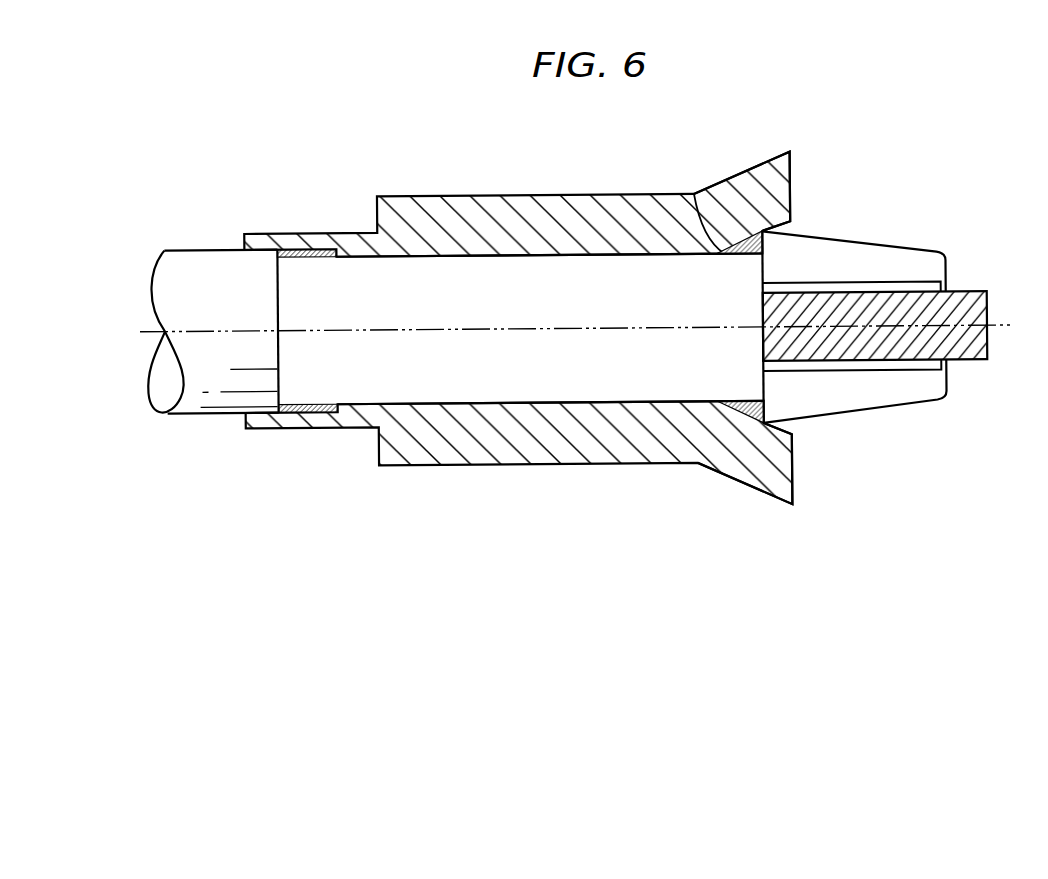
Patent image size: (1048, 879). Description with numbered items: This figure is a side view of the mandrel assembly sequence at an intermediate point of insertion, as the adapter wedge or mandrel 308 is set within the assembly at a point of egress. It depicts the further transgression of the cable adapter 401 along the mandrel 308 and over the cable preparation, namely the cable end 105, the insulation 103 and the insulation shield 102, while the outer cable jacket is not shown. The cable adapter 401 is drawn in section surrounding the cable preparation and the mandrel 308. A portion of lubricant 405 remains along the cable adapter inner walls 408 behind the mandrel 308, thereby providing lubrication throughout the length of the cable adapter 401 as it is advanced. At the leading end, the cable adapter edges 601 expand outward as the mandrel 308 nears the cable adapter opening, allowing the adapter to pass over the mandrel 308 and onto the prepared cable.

The insulation shield 102 is at (203, 411).
The insulation 103 is at (643, 384).
The cable end 105 is at (962, 293).
The mandrel 308 is at (907, 256).
The cable adapter 401 is at (410, 194).
The lubricant 405 is at (300, 247).
The cable adapter inner walls 408 is at (407, 256).
The cable adapter edges 601 is at (782, 192).